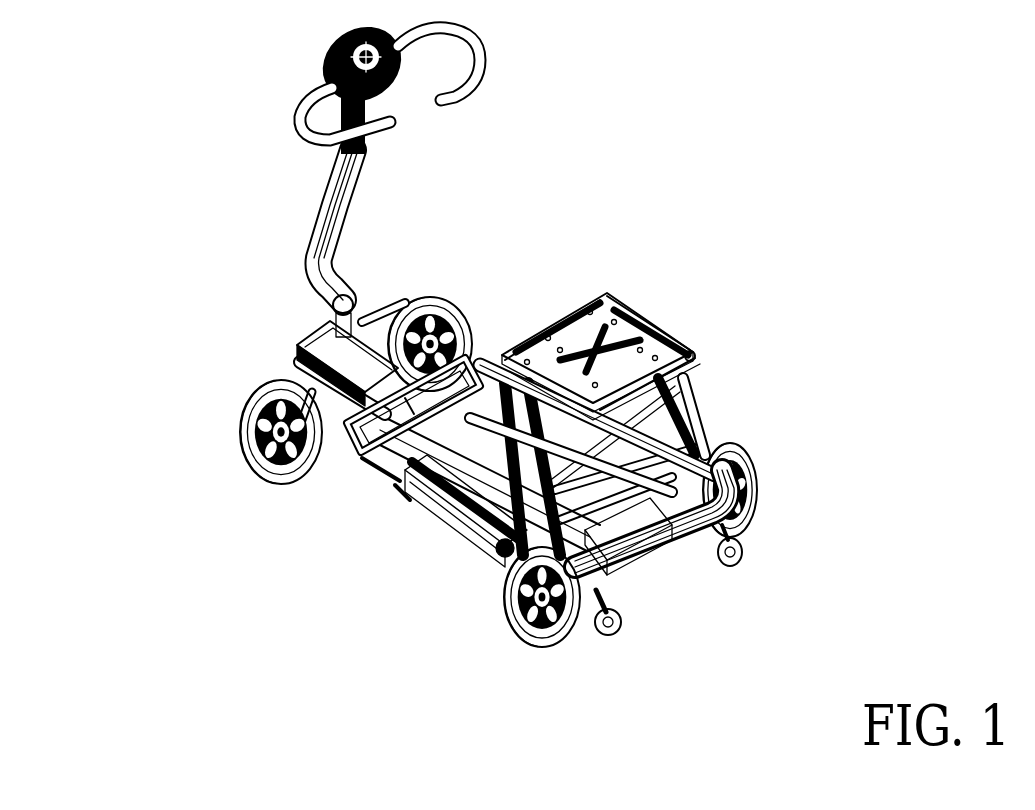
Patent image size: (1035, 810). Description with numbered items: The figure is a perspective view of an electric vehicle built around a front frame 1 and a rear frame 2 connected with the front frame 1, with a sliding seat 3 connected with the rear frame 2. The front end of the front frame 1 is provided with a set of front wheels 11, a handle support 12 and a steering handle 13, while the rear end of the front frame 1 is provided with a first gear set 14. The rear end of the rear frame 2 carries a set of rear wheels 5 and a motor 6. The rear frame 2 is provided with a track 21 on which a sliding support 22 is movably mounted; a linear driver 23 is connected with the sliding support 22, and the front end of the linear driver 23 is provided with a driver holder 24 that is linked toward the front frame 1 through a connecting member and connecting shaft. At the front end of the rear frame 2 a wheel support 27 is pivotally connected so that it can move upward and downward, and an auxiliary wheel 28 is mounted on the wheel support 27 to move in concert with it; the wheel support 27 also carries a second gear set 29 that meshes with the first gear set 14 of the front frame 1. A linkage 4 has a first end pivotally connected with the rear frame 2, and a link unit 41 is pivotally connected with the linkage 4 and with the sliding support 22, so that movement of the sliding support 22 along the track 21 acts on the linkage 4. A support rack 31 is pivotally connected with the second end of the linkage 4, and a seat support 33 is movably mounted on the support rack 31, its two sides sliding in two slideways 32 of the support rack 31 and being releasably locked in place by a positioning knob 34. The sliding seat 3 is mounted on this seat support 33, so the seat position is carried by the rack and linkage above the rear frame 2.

The front frame 1 is at (297, 347).
The rear frame 2 is at (670, 567).
The sliding seat 3 is at (638, 315).
The linkage 4 is at (699, 423).
The rear wheels 5 is at (538, 622).
The motor 6 is at (627, 513).
The front wheels 11 is at (247, 428).
The handle support 12 is at (318, 243).
The steering handle 13 is at (478, 57).
The first gear set 14 is at (390, 468).
The track 21 is at (443, 510).
The sliding support 22 is at (467, 537).
The linear driver 23 is at (720, 507).
The driver holder 24 is at (498, 390).
The wheel support 27 is at (392, 475).
The auxiliary wheel 28 is at (267, 470).
The second gear set 29 is at (397, 479).
The support rack 31 is at (675, 341).
The slideways 32 is at (694, 354).
The seat support 33 is at (530, 338).
The positioning knob 34 is at (617, 300).
The link unit 41 is at (503, 552).